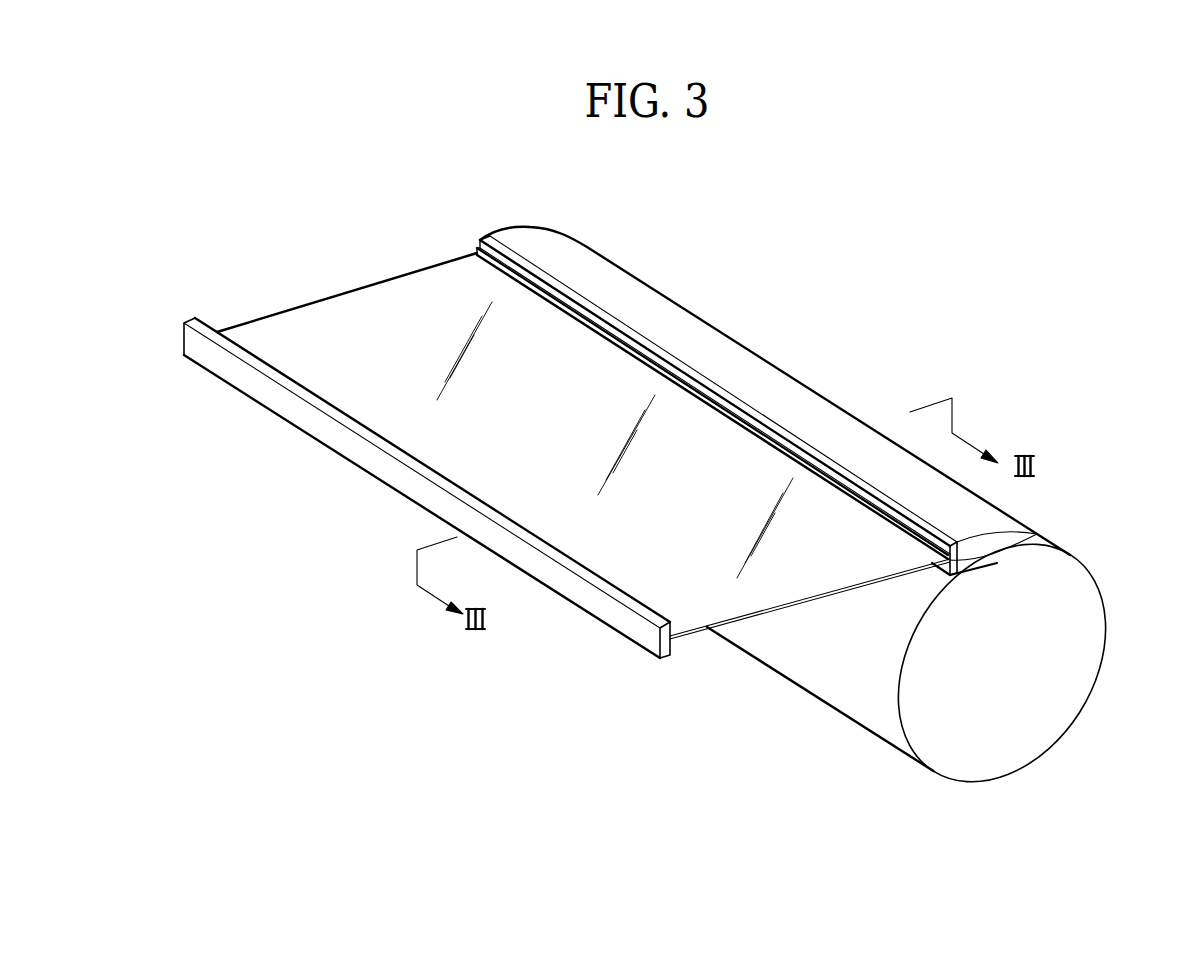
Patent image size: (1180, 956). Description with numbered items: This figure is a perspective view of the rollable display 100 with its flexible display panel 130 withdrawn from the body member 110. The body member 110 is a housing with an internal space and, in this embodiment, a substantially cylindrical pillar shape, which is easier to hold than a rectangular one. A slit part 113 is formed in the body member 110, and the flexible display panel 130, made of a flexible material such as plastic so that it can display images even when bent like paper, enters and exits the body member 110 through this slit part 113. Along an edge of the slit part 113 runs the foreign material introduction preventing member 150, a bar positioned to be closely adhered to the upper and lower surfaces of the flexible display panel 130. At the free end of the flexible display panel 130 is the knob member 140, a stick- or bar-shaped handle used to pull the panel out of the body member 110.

The rollable display 100 is at (410, 220).
The body member 110 is at (1095, 587).
The slit part 113 is at (1012, 546).
The flexible display panel 130 is at (358, 305).
The knob member 140 is at (615, 612).
The foreign material introduction preventing member 150 is at (498, 263).